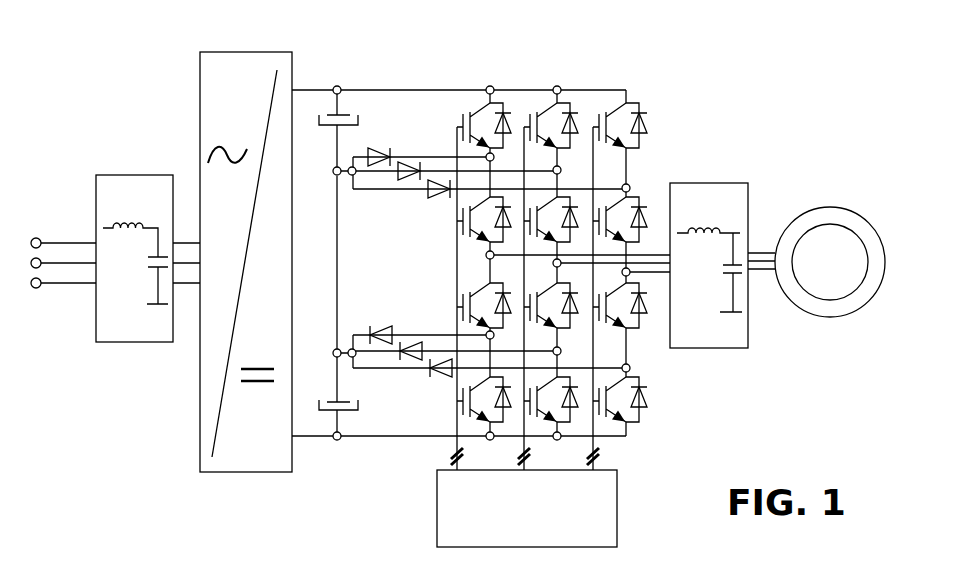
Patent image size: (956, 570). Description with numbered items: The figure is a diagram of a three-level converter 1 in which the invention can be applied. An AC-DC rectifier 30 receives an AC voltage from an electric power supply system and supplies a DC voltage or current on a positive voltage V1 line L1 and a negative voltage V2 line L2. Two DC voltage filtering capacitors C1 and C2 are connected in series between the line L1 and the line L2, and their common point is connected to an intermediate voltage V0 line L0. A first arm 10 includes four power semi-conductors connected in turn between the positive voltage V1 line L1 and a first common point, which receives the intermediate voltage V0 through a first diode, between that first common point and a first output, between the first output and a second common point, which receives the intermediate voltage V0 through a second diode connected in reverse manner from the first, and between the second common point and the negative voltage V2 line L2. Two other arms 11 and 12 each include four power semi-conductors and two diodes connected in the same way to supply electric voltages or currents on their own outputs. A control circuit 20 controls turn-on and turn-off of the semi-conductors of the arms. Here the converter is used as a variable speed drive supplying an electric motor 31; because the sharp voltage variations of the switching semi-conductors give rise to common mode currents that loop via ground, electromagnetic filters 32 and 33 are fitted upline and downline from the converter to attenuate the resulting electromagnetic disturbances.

The converter 1 is at (707, 87).
The first arm 10 is at (619, 74).
The second arm 11 is at (549, 74).
The third arm 12 is at (485, 74).
The control circuit 20 is at (618, 497).
The AC-DC rectifier 30 is at (256, 52).
The electric motor 31 is at (797, 318).
The electromagnetic filter 32 is at (162, 175).
The electromagnetic filter 33 is at (692, 350).
The positive voltage V1 is at (337, 90).
The negative voltage V2 is at (327, 438).
The intermediate voltage V0 is at (339, 258).
The positive voltage line L1 is at (438, 88).
The negative voltage line L2 is at (410, 438).
The intermediate voltage line L0 is at (339, 292).
The DC voltage filtering capacitor C1 is at (359, 119).
The DC voltage filtering capacitor C2 is at (359, 409).